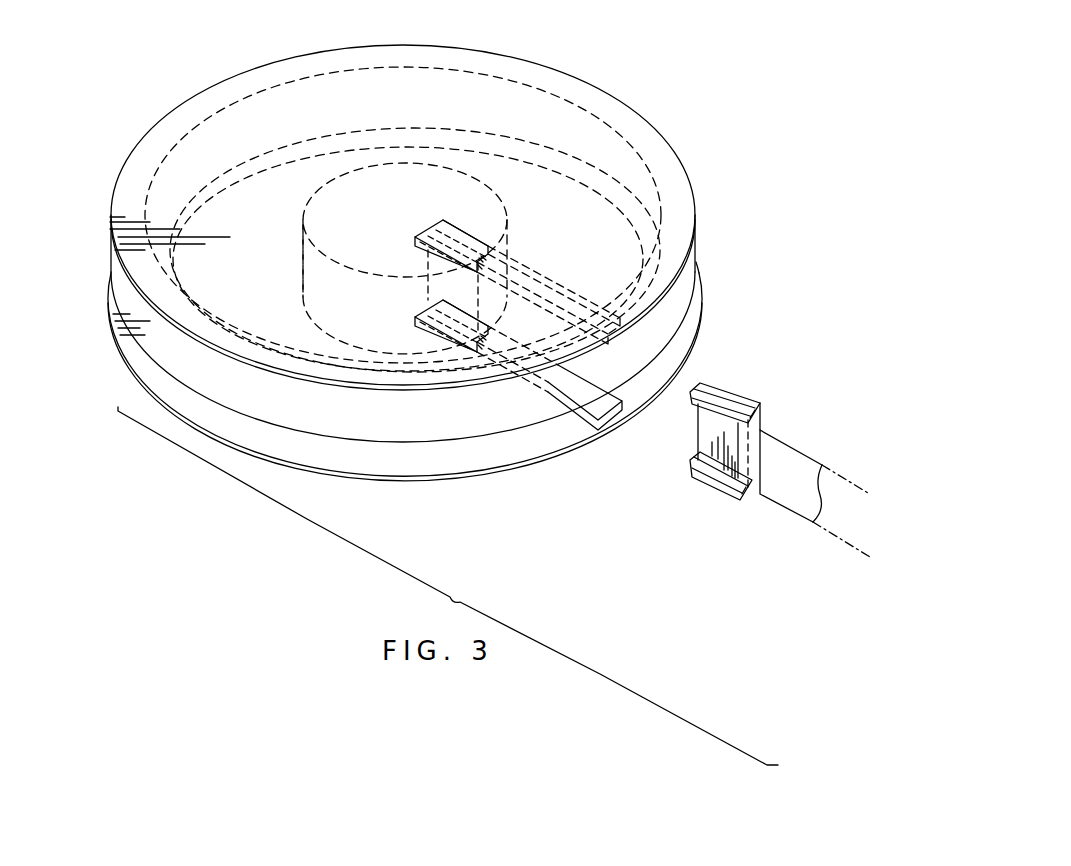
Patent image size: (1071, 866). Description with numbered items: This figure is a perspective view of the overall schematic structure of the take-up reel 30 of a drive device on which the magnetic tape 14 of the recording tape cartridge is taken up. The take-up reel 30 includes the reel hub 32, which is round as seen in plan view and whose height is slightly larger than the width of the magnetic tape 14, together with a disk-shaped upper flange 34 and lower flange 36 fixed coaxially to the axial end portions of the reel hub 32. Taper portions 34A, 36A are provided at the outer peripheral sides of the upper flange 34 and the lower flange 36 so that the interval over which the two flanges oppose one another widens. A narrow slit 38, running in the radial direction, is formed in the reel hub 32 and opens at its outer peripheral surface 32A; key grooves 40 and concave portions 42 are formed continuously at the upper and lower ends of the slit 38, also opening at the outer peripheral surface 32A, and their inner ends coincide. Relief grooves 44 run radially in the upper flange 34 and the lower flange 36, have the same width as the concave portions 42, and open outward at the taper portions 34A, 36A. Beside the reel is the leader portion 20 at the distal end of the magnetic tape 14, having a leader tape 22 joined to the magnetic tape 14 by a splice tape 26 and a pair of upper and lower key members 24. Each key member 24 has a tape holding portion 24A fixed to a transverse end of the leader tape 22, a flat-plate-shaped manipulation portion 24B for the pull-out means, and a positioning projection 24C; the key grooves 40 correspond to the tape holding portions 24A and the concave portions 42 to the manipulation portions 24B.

The magnetic tape 14 is at (793, 505).
The leader portion 20 is at (677, 427).
The leader tape 22 is at (703, 437).
The key member 24 is at (827, 347).
The tape holding portion 24A is at (748, 422).
The manipulation portion 24B is at (740, 395).
The positioning projection 24C is at (723, 382).
The splice tape 26 is at (755, 497).
The take-up reel 30 is at (638, 82).
The reel hub 32 is at (437, 187).
The outer peripheral surface 32A is at (362, 287).
The upper flange 34 is at (670, 157).
The taper portion 34A is at (678, 287).
The lower flange 36 is at (627, 352).
The taper portion 36A is at (685, 312).
The slit 38 is at (487, 293).
The key groove 40 is at (480, 252).
The concave portion 42 is at (595, 224).
The relief groove 44 is at (540, 286).